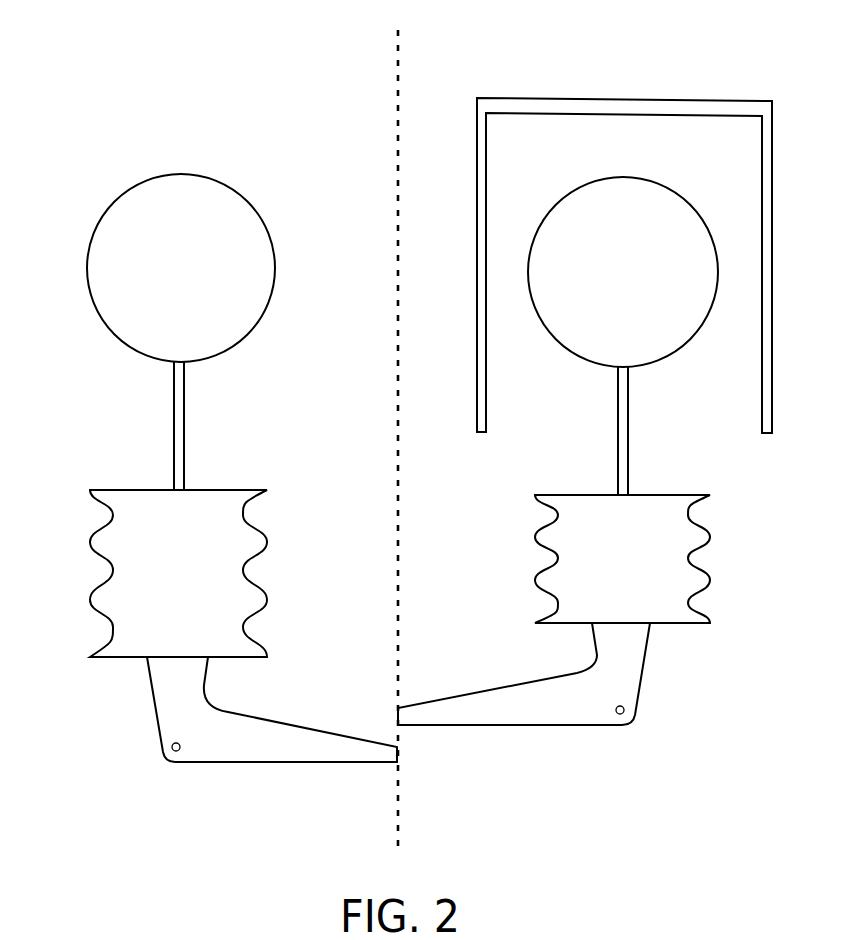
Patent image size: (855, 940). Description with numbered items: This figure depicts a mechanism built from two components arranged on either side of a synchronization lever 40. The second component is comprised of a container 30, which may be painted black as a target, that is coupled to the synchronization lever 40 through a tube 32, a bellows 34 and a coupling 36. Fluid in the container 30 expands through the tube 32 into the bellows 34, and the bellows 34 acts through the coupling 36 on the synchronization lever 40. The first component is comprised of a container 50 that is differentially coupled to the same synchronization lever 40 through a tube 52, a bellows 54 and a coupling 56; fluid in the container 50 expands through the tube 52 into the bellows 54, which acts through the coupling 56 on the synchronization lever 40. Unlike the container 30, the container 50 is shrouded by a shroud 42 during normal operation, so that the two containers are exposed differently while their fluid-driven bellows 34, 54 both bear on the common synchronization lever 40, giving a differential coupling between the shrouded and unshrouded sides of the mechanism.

The container 30 is at (87, 273).
The tube 32 is at (185, 440).
The bellows 34 is at (148, 488).
The coupling 36 is at (156, 717).
The synchronization lever 40 is at (401, 47).
The shroud 42 is at (722, 98).
The container 50 is at (660, 187).
The tube 52 is at (630, 411).
The bellows 54 is at (677, 494).
The coupling 56 is at (647, 665).